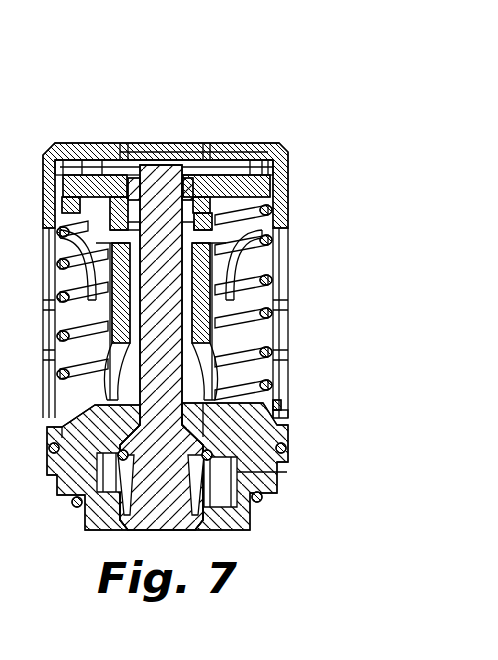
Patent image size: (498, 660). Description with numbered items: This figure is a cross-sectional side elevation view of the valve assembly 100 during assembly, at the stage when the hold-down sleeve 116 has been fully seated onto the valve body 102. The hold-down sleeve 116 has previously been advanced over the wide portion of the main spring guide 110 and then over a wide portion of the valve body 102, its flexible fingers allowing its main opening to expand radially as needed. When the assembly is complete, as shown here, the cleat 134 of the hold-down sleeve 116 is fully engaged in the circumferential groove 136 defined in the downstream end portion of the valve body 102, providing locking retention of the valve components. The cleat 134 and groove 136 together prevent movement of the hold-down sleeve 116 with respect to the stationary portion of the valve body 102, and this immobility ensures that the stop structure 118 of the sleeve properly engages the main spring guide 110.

The valve assembly 100 is at (280, 92).
The valve body 102 is at (289, 456).
The main spring guide 110 is at (263, 196).
The hold-down sleeve 116 is at (74, 143).
The stop structure 118 is at (284, 174).
The cleat 134 is at (280, 412).
The circumferential groove 136 is at (289, 415).